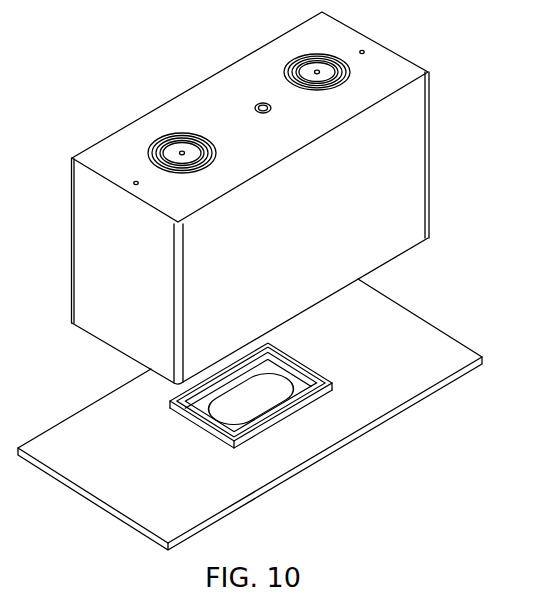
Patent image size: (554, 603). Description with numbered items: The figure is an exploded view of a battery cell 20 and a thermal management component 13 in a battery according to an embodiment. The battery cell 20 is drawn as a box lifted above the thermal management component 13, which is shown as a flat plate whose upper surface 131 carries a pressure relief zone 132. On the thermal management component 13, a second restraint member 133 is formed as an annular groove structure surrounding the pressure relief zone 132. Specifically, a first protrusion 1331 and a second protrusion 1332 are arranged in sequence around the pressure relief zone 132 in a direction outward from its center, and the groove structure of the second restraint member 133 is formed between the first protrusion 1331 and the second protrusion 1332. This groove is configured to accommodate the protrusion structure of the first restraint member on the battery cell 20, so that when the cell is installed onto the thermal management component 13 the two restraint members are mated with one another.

The battery cell 20 is at (383, 258).
The thermal management component 13 is at (250, 414).
The mounting surface 131 is at (113, 472).
The pressure relief zone 132 is at (252, 400).
The second restraint member 133 is at (247, 426).
The first protrusion 1331 is at (260, 482).
The second protrusion 1332 is at (238, 442).